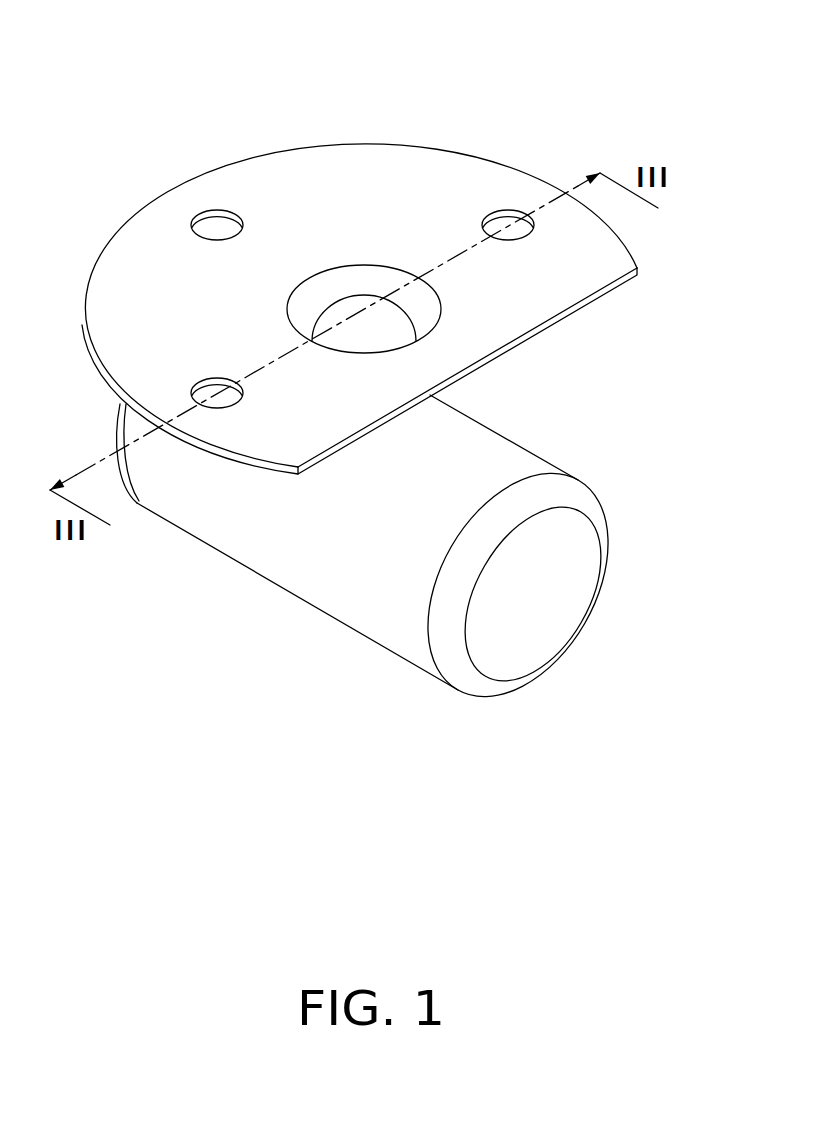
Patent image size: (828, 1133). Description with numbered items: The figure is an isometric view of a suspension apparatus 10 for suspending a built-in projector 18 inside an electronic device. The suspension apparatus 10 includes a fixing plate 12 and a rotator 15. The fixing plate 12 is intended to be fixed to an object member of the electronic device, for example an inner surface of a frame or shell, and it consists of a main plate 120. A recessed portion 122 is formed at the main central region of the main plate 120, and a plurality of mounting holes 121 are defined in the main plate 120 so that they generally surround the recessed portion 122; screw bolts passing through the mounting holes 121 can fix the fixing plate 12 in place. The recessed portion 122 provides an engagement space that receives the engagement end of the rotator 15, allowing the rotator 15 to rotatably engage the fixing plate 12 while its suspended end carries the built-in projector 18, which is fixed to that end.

The suspension apparatus 10 is at (273, 60).
The fixing plate 12 is at (283, 147).
The rotator 15 is at (362, 300).
The built-in projector 18 is at (562, 585).
The main plate 120 is at (583, 289).
The mounting holes 121 is at (210, 228).
The recessed portion 122 is at (490, 350).